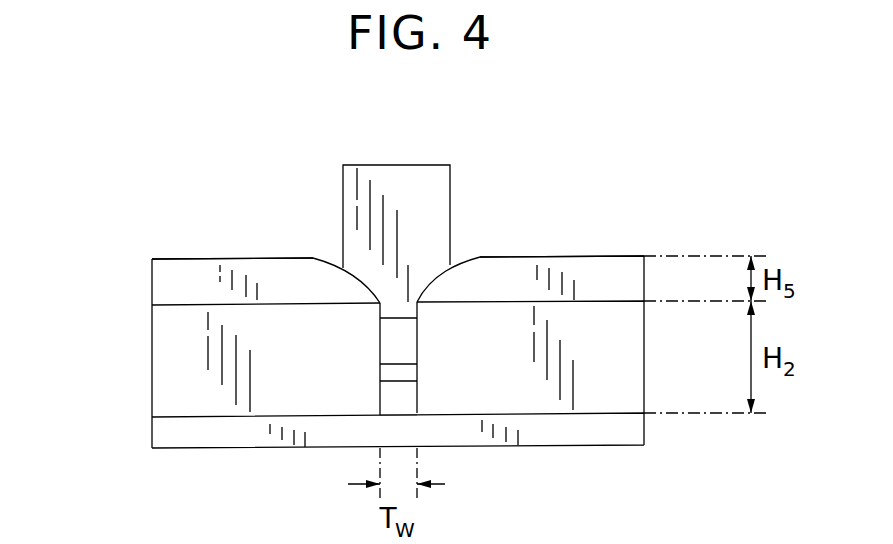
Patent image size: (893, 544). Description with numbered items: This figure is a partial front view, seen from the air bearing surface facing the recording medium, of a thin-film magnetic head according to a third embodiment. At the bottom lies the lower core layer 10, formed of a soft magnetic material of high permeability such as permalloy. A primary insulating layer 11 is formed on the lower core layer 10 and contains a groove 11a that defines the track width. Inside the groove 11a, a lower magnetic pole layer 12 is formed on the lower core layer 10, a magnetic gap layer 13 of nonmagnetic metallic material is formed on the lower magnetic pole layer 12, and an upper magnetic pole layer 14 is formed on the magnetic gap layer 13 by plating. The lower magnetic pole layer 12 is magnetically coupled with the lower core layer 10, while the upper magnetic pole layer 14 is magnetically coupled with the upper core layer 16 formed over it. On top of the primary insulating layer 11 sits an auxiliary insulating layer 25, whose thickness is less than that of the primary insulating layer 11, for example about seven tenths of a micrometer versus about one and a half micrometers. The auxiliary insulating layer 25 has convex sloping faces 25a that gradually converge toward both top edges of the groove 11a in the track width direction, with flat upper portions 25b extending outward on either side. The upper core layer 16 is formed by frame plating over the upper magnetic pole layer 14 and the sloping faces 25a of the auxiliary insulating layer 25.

The lower core layer 10 is at (622, 433).
The primary insulating layer 11 is at (622, 355).
The groove 11a is at (390, 414).
The lower magnetic pole layer 12 is at (402, 400).
The magnetic gap layer 13 is at (403, 372).
The upper magnetic pole layer 14 is at (395, 341).
The upper core layer 16 is at (420, 177).
The auxiliary insulating layer 25 is at (172, 288).
The convex sloping faces 25a is at (362, 280).
The flat top surface of insulating layer 25b is at (190, 258).